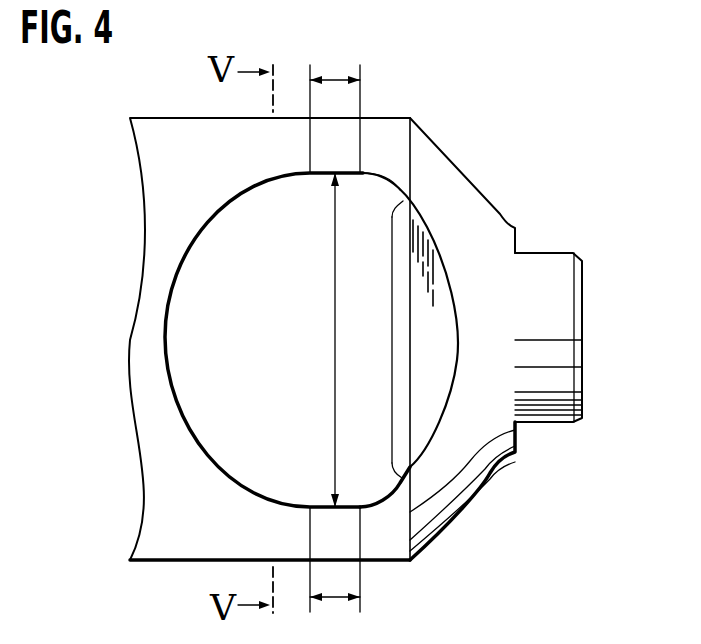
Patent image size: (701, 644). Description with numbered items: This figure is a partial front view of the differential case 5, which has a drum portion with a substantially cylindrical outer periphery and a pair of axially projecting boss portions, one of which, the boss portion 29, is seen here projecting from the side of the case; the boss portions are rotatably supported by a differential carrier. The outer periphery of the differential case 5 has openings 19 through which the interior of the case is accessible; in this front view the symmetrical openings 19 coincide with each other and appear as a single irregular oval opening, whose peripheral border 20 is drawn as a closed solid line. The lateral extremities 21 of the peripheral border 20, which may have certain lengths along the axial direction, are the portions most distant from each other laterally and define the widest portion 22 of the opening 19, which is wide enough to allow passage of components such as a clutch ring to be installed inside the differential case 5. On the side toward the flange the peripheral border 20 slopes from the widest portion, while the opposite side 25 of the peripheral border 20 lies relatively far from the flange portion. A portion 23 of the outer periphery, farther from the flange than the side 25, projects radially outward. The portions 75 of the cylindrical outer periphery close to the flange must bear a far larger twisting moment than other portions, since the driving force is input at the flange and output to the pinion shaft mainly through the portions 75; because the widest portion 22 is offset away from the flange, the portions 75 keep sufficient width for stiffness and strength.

The differential case 5 is at (446, 106).
The opening 19 is at (276, 324).
The peripheral border 20 is at (180, 286).
The lateral extremity 21 is at (360, 65).
The widest portion 22 is at (334, 417).
The portion of the outer periphery 23 is at (423, 422).
The side of the peripheral border 25 is at (390, 364).
The boss portion 29 is at (547, 253).
The portions close to the flange portion 75 is at (198, 173).